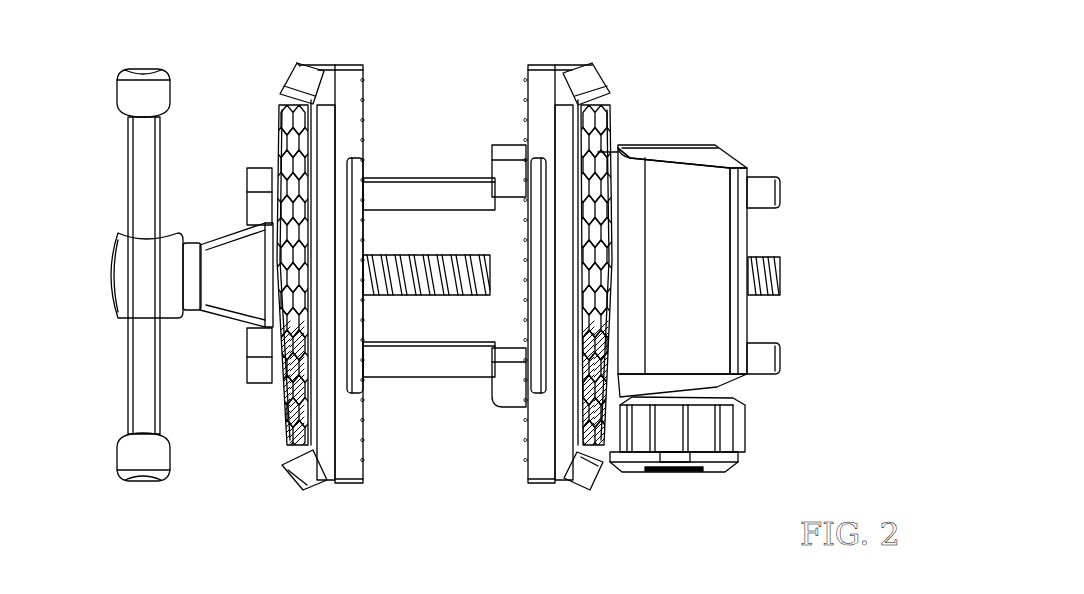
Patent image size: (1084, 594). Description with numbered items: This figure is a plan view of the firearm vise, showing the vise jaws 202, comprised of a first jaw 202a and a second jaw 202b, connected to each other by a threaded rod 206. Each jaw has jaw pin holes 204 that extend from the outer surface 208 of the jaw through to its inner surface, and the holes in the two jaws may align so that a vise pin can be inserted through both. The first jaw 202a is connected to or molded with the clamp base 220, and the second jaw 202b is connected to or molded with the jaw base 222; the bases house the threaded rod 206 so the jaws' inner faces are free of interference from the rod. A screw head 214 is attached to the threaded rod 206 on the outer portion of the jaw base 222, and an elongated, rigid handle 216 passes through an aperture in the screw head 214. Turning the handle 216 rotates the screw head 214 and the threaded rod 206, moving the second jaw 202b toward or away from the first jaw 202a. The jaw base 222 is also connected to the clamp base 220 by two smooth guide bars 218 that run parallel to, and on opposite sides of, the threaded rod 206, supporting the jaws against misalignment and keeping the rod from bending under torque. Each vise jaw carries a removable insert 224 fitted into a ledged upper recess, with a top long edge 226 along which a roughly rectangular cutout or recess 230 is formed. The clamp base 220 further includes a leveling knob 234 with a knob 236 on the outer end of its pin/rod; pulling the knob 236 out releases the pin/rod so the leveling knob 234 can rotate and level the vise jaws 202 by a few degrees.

The vise jaws 202 is at (438, 285).
The first jaw 202a is at (582, 488).
The second jaw 202b is at (298, 473).
The jaw pin holes 204 is at (598, 152).
The threaded rod 206 is at (410, 265).
The outer surface 208 is at (287, 124).
The screw head 214 is at (130, 290).
The handle 216 is at (132, 188).
The guide bars 218 is at (470, 188).
The clamp base 220 is at (748, 232).
The jaw base 222 is at (258, 365).
The insert 224 is at (367, 76).
The top long edge 226 is at (347, 85).
The cutout or recess 230 is at (364, 190).
The leveling knob 234 is at (654, 479).
The knob 236 is at (715, 427).